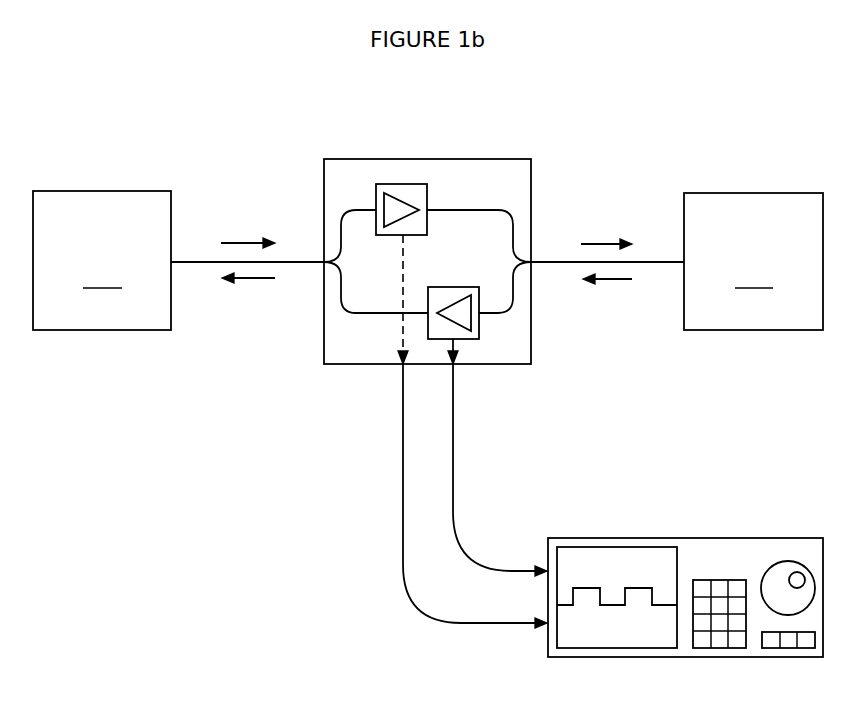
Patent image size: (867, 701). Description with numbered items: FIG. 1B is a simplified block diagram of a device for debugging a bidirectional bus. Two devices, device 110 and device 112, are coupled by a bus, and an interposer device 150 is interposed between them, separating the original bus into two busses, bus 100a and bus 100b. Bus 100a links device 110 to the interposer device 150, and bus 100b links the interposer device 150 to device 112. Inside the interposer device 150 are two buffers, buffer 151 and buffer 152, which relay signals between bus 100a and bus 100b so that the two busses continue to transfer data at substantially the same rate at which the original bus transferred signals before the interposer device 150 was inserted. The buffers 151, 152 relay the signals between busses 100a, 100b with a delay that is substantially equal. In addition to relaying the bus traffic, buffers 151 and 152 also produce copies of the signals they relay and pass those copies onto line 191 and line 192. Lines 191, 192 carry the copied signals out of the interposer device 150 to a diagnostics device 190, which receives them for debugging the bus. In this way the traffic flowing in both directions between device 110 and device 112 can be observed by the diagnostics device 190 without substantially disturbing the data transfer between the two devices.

The bus 100a is at (293, 261).
The bus 100b is at (565, 262).
The device 110 is at (102, 260).
The device 112 is at (753, 261).
The interposer device 150 is at (359, 159).
The buffer 151 is at (400, 184).
The buffer 152 is at (454, 287).
The diagnostics device 190 is at (633, 538).
The line 191 is at (403, 462).
The line 192 is at (453, 462).